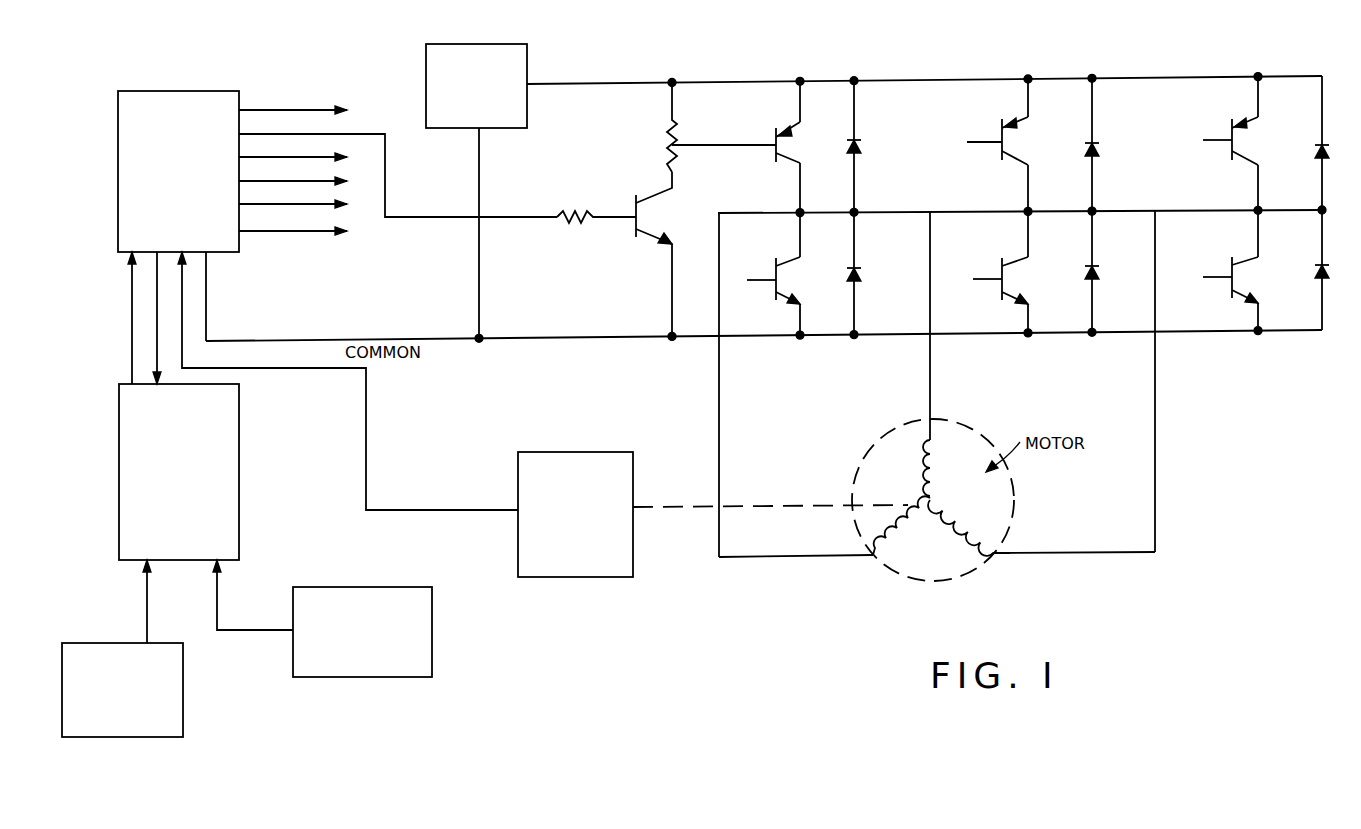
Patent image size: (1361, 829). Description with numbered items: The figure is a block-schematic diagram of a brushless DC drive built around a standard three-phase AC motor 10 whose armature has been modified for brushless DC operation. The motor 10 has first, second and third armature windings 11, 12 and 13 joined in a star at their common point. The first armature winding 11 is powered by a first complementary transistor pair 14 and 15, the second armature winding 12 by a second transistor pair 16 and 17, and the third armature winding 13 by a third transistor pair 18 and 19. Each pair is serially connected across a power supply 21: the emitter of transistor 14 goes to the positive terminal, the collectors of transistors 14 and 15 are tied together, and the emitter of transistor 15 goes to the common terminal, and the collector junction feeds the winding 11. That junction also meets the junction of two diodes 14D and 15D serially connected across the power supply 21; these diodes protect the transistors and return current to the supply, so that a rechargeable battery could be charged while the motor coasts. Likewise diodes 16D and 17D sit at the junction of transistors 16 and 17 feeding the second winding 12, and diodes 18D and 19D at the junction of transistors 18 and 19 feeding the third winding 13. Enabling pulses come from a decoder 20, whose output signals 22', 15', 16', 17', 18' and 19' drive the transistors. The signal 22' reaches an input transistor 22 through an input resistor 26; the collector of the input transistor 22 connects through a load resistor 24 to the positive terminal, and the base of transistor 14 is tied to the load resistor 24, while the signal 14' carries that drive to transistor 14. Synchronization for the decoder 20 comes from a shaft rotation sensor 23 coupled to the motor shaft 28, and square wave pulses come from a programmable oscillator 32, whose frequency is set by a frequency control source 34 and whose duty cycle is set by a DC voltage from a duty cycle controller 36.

The motor 10 is at (968, 574).
The first armature winding 11 is at (878, 558).
The second armature winding 12 is at (945, 441).
The third armature winding 13 is at (997, 553).
The transistor 14 is at (768, 126).
The transistor 14 base line 14' is at (724, 133).
The diode 14D is at (866, 150).
The transistor 15 is at (773, 294).
The decoder output signal 15' is at (293, 145).
The diode 15D is at (866, 277).
The transistor 16 is at (992, 133).
The decoder output signal 16' is at (293, 169).
The diode 16D is at (1103, 152).
The transistor 17 is at (997, 294).
The decoder output signal 17' is at (293, 193).
The diode 17D is at (1100, 275).
The transistor 18 is at (1221, 133).
The decoder output signal 18' is at (293, 219).
The diode 18D is at (1312, 152).
The transistor 19 is at (1226, 294).
The decoder output signal 19' is at (293, 98).
The diode 19D is at (1312, 272).
The decoder 20 is at (168, 91).
The power supply 21 is at (494, 44).
The input transistor 22 is at (639, 254).
The decoder output signal 22' is at (398, 162).
The shaft rotation sensor 23 is at (596, 452).
The load resistor 24 is at (668, 138).
The input resistor 26 is at (560, 212).
The motor shaft 28 is at (762, 507).
The programmable oscillator 32 is at (118, 421).
The frequency control source 34 is at (183, 727).
The duty cycle controller 36 is at (432, 646).